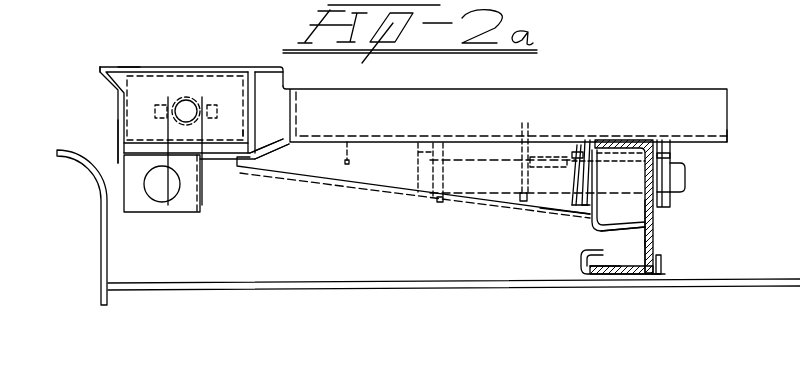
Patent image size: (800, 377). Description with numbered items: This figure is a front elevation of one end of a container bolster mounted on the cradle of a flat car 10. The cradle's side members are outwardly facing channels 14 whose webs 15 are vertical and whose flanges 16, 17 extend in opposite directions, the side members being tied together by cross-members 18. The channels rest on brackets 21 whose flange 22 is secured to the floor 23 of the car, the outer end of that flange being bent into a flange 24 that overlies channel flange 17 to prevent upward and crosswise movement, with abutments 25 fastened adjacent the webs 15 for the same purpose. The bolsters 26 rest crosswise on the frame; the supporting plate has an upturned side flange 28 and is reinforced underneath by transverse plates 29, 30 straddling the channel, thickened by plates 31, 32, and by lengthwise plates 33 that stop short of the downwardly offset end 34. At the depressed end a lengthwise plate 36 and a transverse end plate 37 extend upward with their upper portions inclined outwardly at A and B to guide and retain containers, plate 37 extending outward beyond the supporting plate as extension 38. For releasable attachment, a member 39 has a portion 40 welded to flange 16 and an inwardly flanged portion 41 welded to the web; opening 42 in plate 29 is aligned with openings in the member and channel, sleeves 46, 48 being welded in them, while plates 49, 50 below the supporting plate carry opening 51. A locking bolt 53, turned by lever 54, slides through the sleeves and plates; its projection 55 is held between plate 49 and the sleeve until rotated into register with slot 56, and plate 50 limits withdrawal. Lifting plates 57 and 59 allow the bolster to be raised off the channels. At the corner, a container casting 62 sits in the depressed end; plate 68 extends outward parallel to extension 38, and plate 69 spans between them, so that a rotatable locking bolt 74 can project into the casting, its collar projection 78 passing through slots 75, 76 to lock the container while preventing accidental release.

The car 10 is at (100, 235).
The channels 14 is at (654, 228).
The webs 15 is at (647, 243).
The flanges 16 is at (628, 143).
The flanges 17 is at (613, 275).
The cross-members 18 is at (608, 6).
The brackets 21 is at (664, 274).
The flange 22 is at (647, 275).
The floor 23 is at (405, 287).
The flange 24 is at (593, 255).
The abutments 25 is at (661, 258).
The bolsters 26 is at (727, 142).
The flange 28 is at (433, 105).
The plates 29 is at (585, 157).
The plate 30 is at (667, 142).
The plates 31 is at (585, 213).
The plates 32 is at (660, 140).
The plates 33 is at (322, 170).
The offset 34 is at (273, 145).
The plate 36 is at (270, 85).
The plate 37 is at (117, 121).
The extension 38 is at (122, 140).
The member 39 is at (597, 175).
The portion 40 is at (588, 208).
The portion 41 is at (617, 230).
The opening 42 is at (577, 150).
The sleeve 46 is at (562, 210).
The sleeve 48 is at (672, 193).
The plate 49 is at (522, 201).
The plate 50 is at (438, 203).
The opening 51 is at (521, 163).
The locking bolt 53 is at (686, 177).
The lever 54 is at (423, 178).
The projection 55 is at (552, 164).
The slot 56 is at (523, 148).
The plates 57 is at (350, 163).
The lifting plates 59 is at (137, 206).
The castings 62 is at (227, 72).
The plate 68 is at (247, 132).
The plate 69 is at (235, 120).
The locking bolt 74 is at (182, 100).
The slot 75 is at (156, 112).
The slot 76 is at (218, 113).
The projection 78 is at (185, 98).
The inclined upper portion A is at (127, 67).
The inclined upper portion B is at (103, 79).